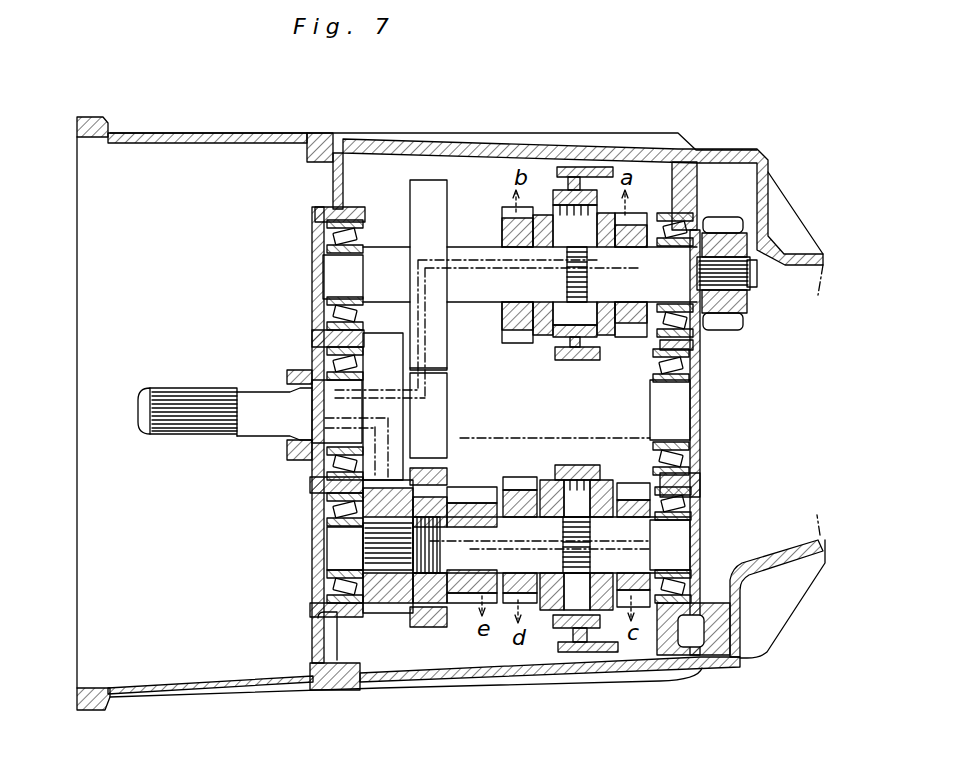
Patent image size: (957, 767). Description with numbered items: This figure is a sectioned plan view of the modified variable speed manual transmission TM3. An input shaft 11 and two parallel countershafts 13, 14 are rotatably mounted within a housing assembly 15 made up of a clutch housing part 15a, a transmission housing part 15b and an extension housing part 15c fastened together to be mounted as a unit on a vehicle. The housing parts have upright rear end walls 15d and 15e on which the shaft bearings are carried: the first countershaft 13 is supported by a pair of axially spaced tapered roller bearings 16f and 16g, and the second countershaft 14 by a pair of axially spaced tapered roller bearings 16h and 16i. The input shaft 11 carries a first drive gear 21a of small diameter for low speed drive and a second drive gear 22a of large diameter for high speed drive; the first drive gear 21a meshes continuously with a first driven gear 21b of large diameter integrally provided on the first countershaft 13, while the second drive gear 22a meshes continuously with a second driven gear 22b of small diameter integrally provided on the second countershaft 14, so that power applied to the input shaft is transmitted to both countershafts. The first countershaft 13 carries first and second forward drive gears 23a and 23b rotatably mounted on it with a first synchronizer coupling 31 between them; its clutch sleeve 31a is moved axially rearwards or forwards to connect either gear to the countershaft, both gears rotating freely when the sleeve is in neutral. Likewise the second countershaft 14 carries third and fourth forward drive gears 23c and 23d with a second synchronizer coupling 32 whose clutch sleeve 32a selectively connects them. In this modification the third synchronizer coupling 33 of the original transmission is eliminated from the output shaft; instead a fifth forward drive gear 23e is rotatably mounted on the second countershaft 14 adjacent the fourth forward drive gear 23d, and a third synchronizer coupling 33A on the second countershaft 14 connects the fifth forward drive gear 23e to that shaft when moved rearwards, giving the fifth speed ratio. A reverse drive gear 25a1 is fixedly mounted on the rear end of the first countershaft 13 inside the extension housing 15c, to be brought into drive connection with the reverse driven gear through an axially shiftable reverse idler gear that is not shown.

The input shaft 11 is at (247, 425).
The first countershaft 13 is at (787, 265).
The second countershaft 14 is at (680, 548).
The housing assembly 15 is at (494, 128).
The clutch housing part 15a is at (243, 686).
The transmission housing part 15b is at (513, 678).
The extension housing part 15c is at (778, 627).
The upright rear end wall 15d is at (312, 335).
The upright rear end wall 15e is at (698, 478).
The tapered roller bearing 16f is at (330, 205).
The tapered roller bearing 16g is at (690, 343).
The tapered roller bearing 16h is at (315, 604).
The tapered roller bearing 16i is at (692, 580).
The first drive gear 21a is at (440, 390).
The first driven gear 21b is at (440, 203).
The second drive gear 22a is at (380, 352).
The second driven gear 22b is at (389, 614).
The first forward drive gear 23a is at (621, 339).
The second forward drive gear 23b is at (522, 342).
The third forward drive gear 23c is at (630, 500).
The fourth forward drive gear 23d is at (522, 490).
The fifth forward drive gear 23e is at (474, 495).
The reverse drive gear 25a1 is at (723, 228).
The first synchronizer coupling 31 is at (568, 362).
The clutch sleeve 31a is at (585, 357).
The second synchronizer coupling 32 is at (574, 462).
The clutch sleeve 32a is at (592, 470).
The third synchronizer coupling 33 is at (421, 633).
The third synchronizer coupling 33A is at (442, 613).
The modified manual transmission TM3 is at (696, 85).